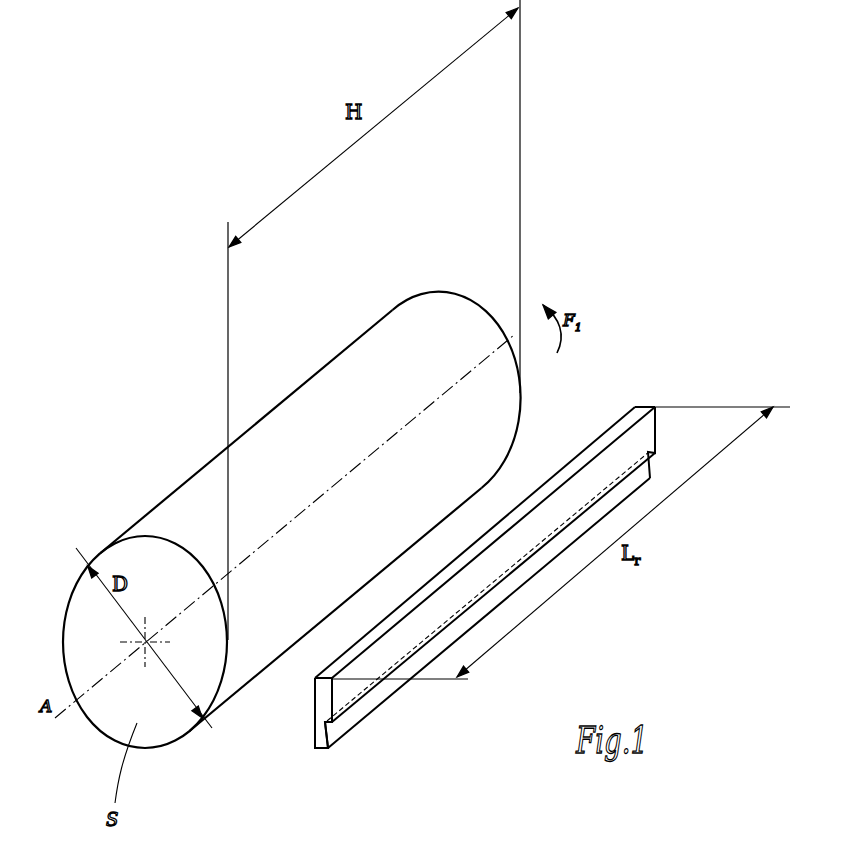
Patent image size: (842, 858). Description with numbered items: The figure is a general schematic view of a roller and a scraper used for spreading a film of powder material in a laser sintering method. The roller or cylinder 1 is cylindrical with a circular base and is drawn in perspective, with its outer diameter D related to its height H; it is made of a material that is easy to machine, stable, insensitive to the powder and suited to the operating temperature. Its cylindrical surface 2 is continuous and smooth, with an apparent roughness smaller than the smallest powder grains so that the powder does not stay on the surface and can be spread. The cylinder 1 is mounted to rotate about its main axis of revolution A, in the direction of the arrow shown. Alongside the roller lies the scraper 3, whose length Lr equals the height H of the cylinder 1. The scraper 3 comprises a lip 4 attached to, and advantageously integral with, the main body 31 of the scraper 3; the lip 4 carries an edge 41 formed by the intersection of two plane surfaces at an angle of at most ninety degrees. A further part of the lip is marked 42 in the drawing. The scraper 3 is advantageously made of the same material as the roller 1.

The roller 1 is at (197, 503).
The cylindrical surface 2 is at (348, 360).
The scraper 3 is at (506, 498).
The main body 31 is at (325, 698).
The lip 4 is at (325, 740).
The edge 41 is at (338, 756).
The side face 42 is at (300, 731).